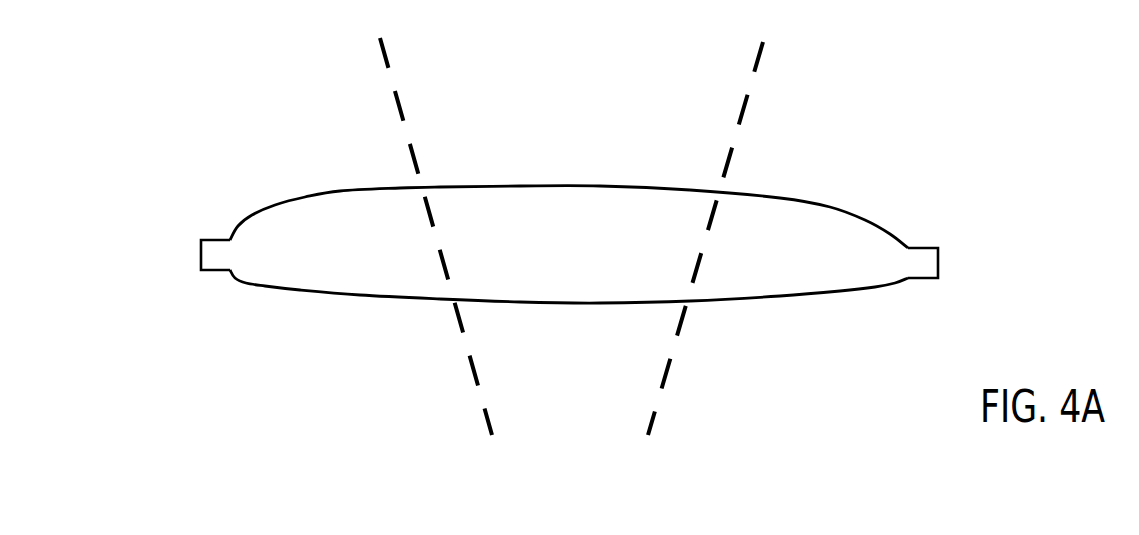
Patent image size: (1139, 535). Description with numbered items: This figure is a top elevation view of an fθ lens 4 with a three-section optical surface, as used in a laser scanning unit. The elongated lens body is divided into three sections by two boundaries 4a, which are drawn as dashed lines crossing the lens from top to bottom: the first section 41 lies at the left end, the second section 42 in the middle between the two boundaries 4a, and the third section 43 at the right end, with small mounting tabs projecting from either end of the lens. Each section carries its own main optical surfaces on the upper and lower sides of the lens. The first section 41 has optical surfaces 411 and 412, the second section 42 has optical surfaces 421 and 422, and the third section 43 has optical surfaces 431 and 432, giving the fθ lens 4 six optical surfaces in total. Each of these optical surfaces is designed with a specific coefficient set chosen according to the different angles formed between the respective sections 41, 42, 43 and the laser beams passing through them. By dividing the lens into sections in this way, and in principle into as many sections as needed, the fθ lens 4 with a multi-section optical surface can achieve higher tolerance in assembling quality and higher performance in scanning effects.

The fθ lens 4 is at (863, 246).
The boundary 4a is at (399, 104).
The first section 41 is at (387, 262).
The optical surface 411 is at (333, 192).
The optical surface 412 is at (295, 290).
The second section 42 is at (636, 277).
The optical surface 421 is at (474, 188).
The optical surface 422 is at (568, 300).
The third section 43 is at (834, 275).
The optical surface 431 is at (808, 192).
The optical surface 432 is at (765, 300).